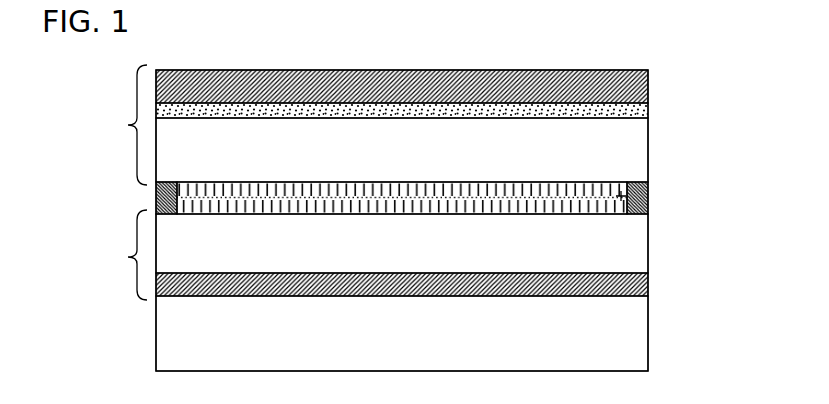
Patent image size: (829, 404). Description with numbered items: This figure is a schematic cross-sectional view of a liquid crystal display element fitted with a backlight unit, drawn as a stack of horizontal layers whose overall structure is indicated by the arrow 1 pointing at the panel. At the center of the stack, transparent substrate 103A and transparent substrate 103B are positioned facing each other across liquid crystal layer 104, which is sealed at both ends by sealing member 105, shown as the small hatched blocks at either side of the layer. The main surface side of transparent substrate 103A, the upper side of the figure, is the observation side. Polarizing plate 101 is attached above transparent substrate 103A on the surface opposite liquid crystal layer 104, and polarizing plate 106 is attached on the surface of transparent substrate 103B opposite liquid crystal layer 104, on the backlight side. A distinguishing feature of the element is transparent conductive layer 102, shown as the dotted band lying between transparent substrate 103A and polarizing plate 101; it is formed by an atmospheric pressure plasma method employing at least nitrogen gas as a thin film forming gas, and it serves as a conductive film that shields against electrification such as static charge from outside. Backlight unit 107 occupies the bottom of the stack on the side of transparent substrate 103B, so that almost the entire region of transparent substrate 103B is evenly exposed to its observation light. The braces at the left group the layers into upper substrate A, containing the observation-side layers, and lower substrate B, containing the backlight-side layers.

The color filter substrate 1 is at (395, 50).
The polarizing plate 101 is at (648, 86).
The transparent conductive layer 102 is at (648, 108).
The transparent substrate 103A is at (642, 146).
The liquid crystal layer 104 is at (648, 183).
The sealing member 105 is at (648, 203).
The transparent substrate 103B is at (631, 250).
The polarizing plate 106 is at (648, 285).
The backlight unit 107 is at (634, 335).
The upper substrate A is at (124, 125).
The lower substrate B is at (124, 255).